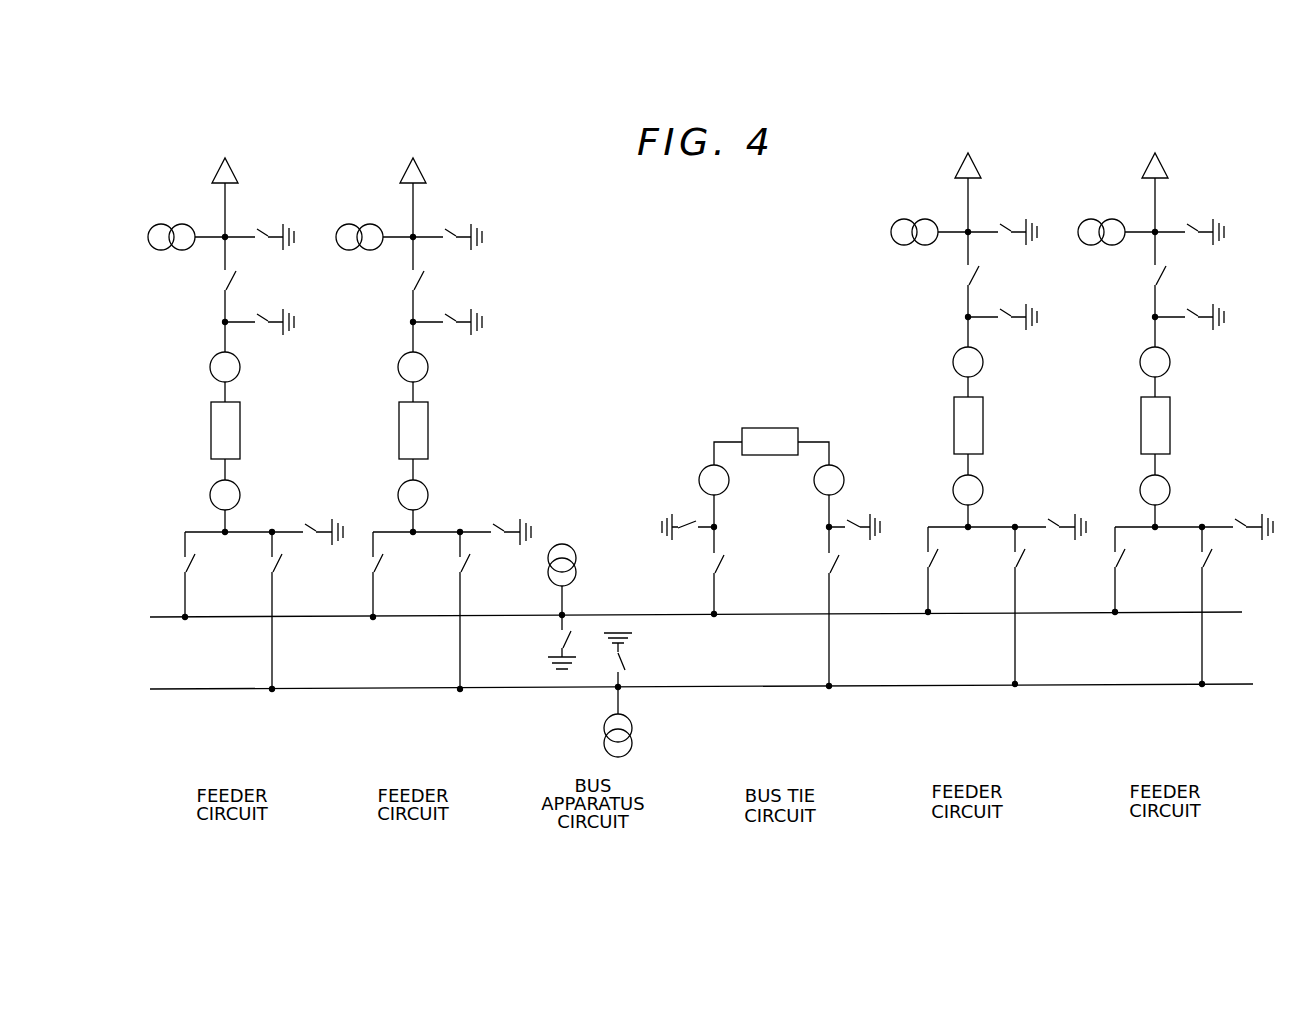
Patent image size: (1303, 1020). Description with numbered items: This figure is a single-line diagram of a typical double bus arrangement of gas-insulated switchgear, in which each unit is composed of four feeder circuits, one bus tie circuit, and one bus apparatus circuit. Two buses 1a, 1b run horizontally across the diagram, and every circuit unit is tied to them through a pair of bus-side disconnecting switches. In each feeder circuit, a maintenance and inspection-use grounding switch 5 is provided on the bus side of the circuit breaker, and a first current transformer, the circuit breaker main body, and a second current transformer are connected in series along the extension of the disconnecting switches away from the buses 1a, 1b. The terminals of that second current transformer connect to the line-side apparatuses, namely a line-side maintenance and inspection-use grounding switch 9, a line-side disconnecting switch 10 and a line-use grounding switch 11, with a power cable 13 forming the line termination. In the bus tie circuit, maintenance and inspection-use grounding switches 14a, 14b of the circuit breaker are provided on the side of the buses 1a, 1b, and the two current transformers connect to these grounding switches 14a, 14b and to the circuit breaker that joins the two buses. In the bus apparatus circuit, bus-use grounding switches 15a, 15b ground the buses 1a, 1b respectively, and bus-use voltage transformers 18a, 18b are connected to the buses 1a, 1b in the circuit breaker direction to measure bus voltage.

The bus 1a is at (719, 621).
The bus 1b is at (719, 693).
The maintenance and inspection-use grounding switch 5 is at (322, 514).
The line-side maintenance and inspection-use grounding switch 9 is at (272, 334).
The line-side disconnecting switch 10 is at (237, 279).
The line-use grounding switch 11 is at (276, 222).
The power cable 13 is at (233, 162).
The maintenance and inspection-use grounding switch 14a is at (680, 537).
The maintenance and inspection-use grounding switch 14b is at (863, 513).
The bus-use grounding switch 15a is at (552, 655).
The bus-use grounding switch 15b is at (628, 650).
The bus-use voltage transformer 18a is at (564, 534).
The bus-use voltage transformer 18b is at (632, 727).